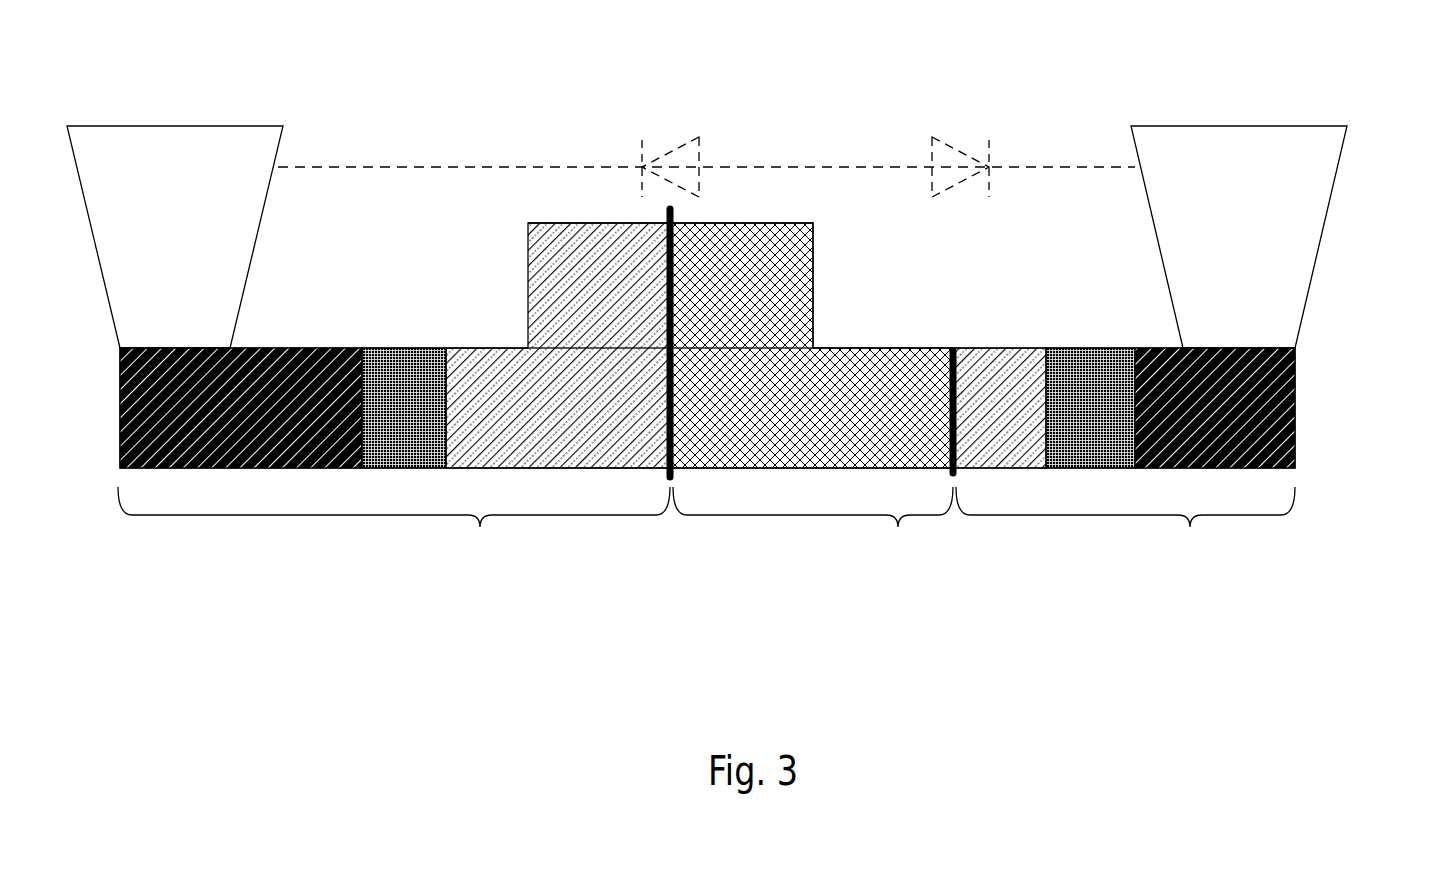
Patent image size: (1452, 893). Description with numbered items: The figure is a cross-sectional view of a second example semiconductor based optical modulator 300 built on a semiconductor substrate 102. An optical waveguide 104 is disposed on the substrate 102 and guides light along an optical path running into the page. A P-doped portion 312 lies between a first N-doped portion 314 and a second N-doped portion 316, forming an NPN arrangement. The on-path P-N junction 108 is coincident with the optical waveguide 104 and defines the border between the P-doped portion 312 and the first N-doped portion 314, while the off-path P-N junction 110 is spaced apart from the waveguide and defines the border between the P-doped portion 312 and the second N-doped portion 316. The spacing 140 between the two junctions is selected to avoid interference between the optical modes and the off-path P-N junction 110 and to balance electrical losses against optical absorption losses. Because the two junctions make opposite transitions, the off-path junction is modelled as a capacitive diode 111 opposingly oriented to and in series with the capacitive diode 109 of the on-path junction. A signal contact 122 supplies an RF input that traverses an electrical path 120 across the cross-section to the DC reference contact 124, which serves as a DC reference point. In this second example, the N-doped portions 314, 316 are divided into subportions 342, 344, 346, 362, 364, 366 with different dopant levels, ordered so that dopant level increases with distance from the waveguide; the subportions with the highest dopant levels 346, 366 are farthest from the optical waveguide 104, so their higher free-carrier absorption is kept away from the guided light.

The second example semiconductor based optical modulator 300 is at (1388, 76).
The semiconductor substrate 102 is at (1328, 348).
The optical waveguide 104 is at (823, 222).
The on-path P-N junction 108 is at (681, 212).
The capacitive diode of the on-path P-N junction 109 is at (697, 128).
The off-path P-N junction 110 is at (957, 335).
The capacitive diode of the off-path P-N junction 111 is at (958, 128).
The electrical path 120 is at (1054, 147).
The signal contact 122 is at (161, 260).
The DC reference contact 124 is at (1226, 260).
The P-doped portion 312 is at (811, 345).
The first N-doped portion 314 is at (394, 518).
The second N-doped portion 316 is at (1125, 518).
The spacing 140 is at (813, 518).
The subportion of the first N-doped portion 342 is at (516, 416).
The subportion of the first N-doped portion 344 is at (390, 416).
The highest-dopant subportion of the first N-doped portion 346 is at (227, 416).
The subportion of the second N-doped portion 362 is at (986, 416).
The subportion of the second N-doped portion 364 is at (1076, 416).
The highest-dopant subportion of the second N-doped portion 366 is at (1201, 416).